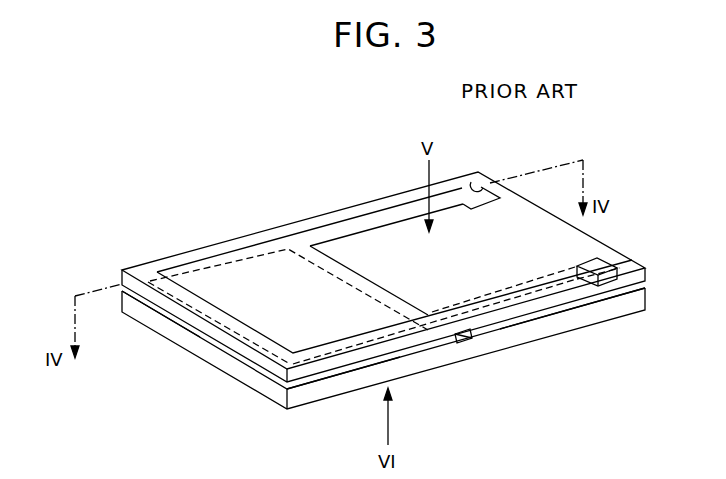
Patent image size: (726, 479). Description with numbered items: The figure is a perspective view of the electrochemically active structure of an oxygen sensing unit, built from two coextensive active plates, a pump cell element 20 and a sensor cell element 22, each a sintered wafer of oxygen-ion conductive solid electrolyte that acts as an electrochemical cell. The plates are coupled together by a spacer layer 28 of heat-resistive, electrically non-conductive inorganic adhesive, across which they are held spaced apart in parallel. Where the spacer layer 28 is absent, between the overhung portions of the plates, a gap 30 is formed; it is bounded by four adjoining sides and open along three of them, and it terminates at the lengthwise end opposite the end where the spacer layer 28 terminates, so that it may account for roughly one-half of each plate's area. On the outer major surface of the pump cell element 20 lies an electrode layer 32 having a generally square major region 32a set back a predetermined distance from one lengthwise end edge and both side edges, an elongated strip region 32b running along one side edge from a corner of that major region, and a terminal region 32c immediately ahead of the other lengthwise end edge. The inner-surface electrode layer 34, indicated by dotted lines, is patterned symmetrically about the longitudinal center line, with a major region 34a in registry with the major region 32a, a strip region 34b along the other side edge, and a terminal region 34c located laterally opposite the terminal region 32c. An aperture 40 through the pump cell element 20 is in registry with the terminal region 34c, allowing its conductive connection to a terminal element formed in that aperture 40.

The first active plate (pump cell element) 20 is at (240, 357).
The second active plate (sensor cell element) 22 is at (149, 327).
The spacer layer 28 is at (568, 318).
The gap 30 is at (341, 373).
The electrode layer 32 is at (286, 228).
The major region 32a is at (223, 253).
The strip region 32b is at (373, 207).
The terminal region 32c is at (477, 184).
The electrode layer 34 is at (439, 338).
The major region 34a is at (190, 275).
The strip region 34b is at (520, 316).
The terminal region 34c is at (620, 305).
The aperture 40 is at (615, 262).